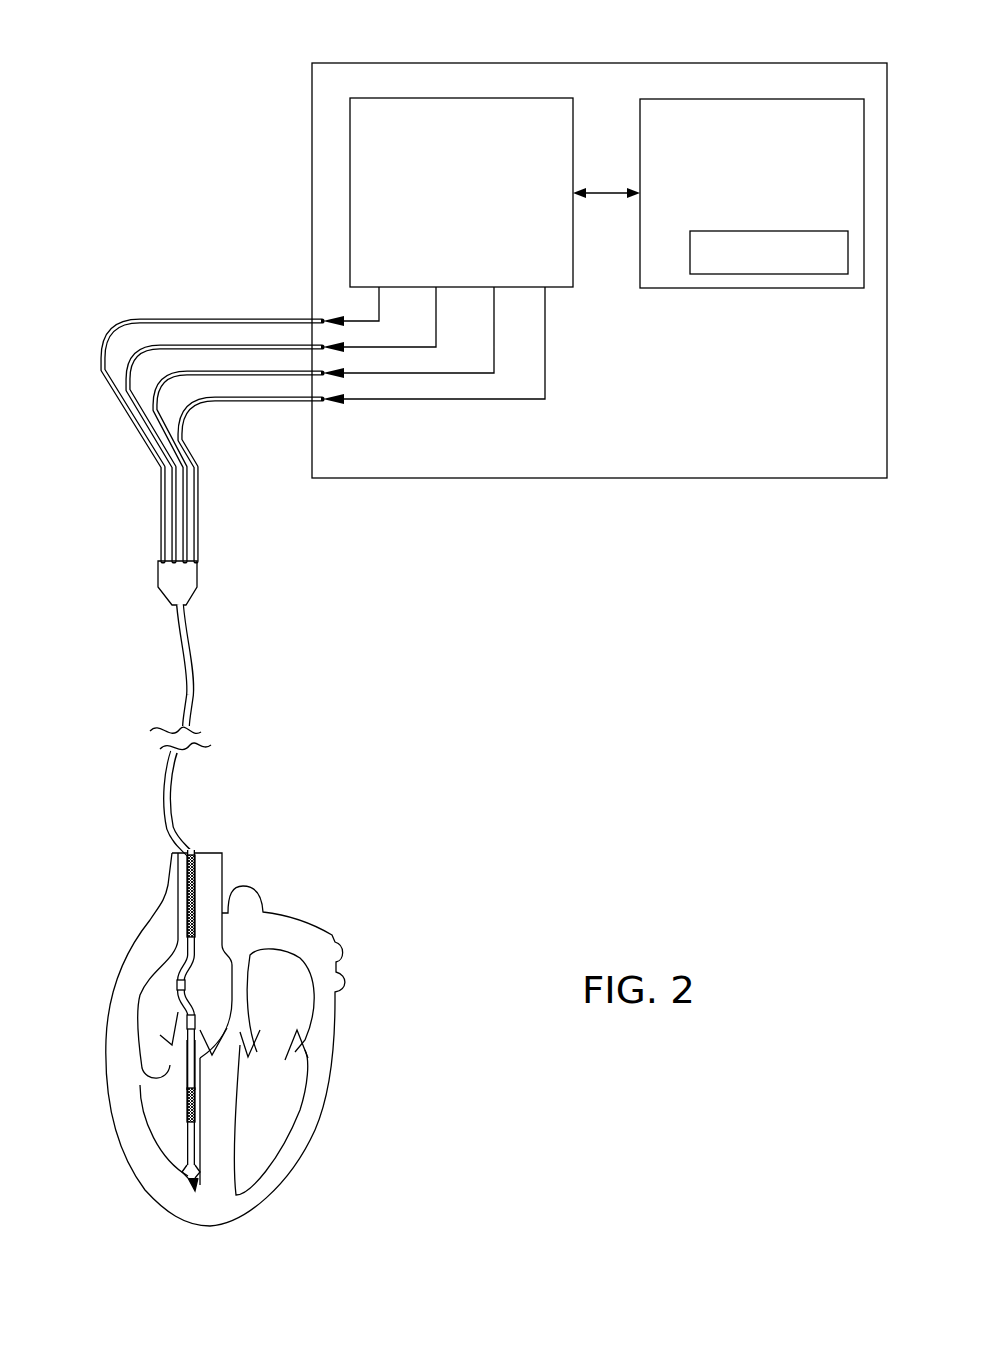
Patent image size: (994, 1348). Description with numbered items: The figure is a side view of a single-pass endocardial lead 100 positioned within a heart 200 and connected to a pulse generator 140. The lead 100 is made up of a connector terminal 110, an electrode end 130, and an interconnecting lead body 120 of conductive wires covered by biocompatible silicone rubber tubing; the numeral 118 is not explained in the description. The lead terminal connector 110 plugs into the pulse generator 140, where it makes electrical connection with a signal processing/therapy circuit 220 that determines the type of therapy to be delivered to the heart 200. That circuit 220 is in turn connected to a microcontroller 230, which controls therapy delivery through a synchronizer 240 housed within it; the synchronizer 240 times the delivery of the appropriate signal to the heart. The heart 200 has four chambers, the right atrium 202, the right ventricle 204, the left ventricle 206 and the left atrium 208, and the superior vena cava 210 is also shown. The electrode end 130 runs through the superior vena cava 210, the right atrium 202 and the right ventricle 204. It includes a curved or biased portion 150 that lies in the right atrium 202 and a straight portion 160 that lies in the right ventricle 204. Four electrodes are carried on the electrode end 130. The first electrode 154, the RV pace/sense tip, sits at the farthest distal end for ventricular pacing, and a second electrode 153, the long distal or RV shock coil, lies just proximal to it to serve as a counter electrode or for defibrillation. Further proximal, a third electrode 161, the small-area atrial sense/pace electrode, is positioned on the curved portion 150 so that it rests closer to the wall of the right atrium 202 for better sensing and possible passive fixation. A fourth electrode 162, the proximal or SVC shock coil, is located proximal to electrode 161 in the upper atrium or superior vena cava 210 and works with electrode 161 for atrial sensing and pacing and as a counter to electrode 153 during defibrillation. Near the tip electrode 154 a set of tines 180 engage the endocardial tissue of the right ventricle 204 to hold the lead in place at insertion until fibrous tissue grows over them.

The lead 100 is at (112, 137).
The connector terminal 110 is at (194, 413).
The lead 118 is at (187, 645).
The lead body 120 is at (195, 697).
The electrode end 130 is at (185, 1024).
The pulse generator 140 is at (472, 63).
The curved portion 150 is at (180, 972).
The second electrode 153 is at (185, 1100).
The first electrode 154 is at (200, 1193).
The straight portion 160 is at (187, 1063).
The third electrode 161 is at (176, 985).
The fourth electrode 162 is at (194, 888).
The tines 180 is at (183, 1172).
The heart 200 is at (333, 1035).
The right atrium 202 is at (148, 1010).
The right ventricle 204 is at (160, 1130).
The left ventricle 206 is at (290, 1108).
The left atrium 208 is at (293, 960).
The superior vena cava 210 is at (162, 890).
The signal processing/therapy circuit 220 is at (350, 148).
The microcontroller 230 is at (713, 98).
The synchronizer 240 is at (793, 275).